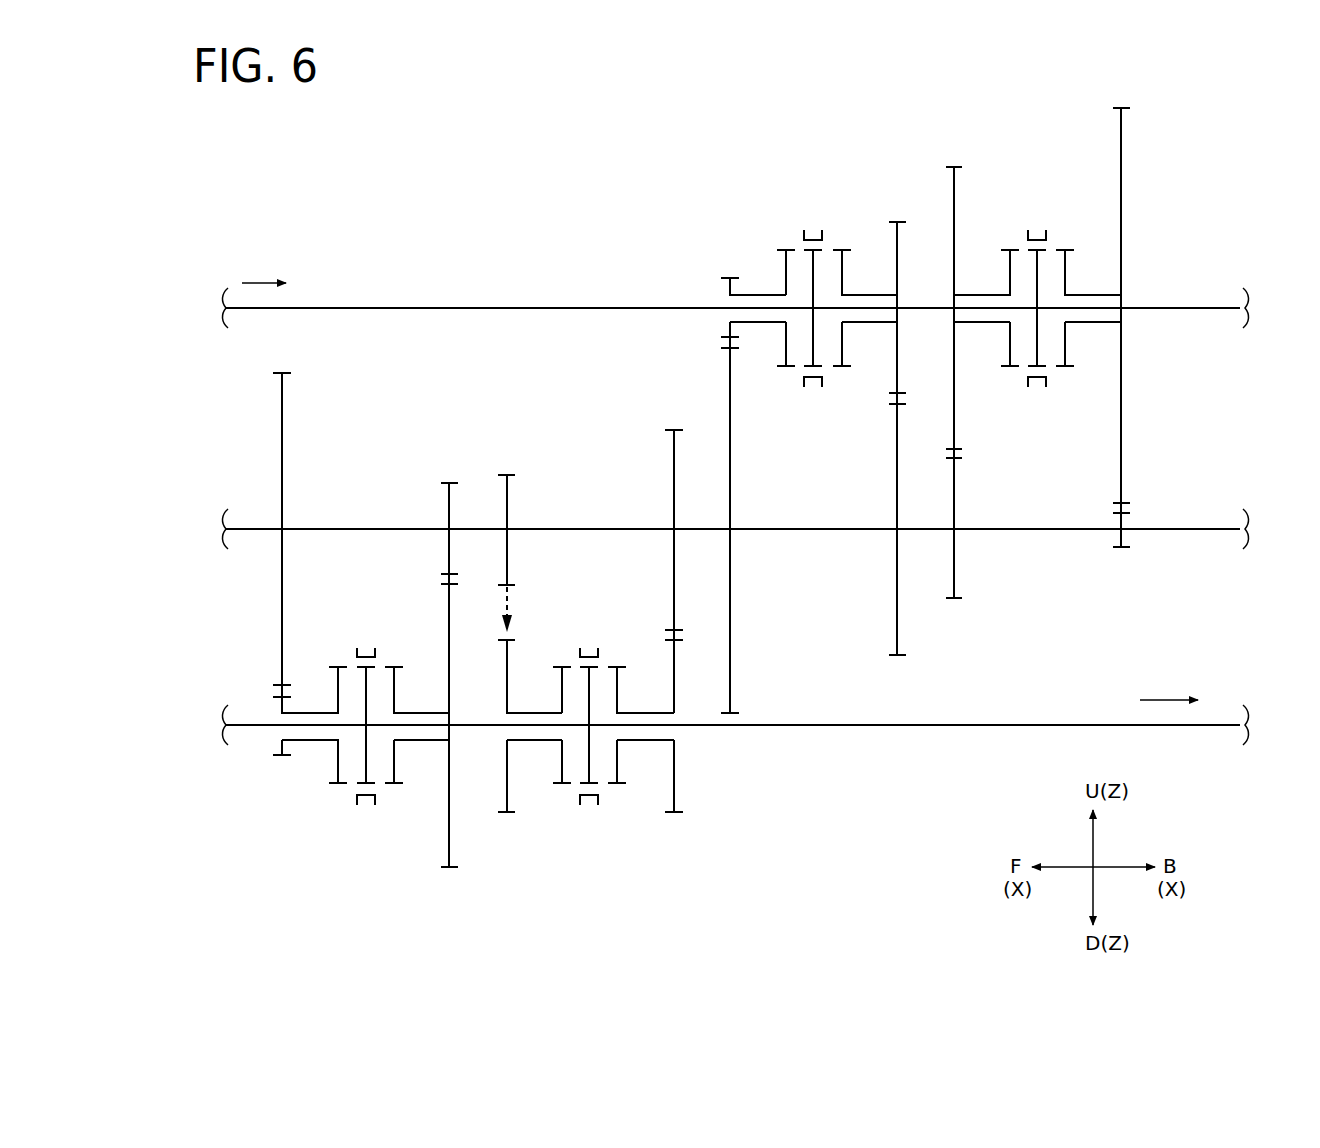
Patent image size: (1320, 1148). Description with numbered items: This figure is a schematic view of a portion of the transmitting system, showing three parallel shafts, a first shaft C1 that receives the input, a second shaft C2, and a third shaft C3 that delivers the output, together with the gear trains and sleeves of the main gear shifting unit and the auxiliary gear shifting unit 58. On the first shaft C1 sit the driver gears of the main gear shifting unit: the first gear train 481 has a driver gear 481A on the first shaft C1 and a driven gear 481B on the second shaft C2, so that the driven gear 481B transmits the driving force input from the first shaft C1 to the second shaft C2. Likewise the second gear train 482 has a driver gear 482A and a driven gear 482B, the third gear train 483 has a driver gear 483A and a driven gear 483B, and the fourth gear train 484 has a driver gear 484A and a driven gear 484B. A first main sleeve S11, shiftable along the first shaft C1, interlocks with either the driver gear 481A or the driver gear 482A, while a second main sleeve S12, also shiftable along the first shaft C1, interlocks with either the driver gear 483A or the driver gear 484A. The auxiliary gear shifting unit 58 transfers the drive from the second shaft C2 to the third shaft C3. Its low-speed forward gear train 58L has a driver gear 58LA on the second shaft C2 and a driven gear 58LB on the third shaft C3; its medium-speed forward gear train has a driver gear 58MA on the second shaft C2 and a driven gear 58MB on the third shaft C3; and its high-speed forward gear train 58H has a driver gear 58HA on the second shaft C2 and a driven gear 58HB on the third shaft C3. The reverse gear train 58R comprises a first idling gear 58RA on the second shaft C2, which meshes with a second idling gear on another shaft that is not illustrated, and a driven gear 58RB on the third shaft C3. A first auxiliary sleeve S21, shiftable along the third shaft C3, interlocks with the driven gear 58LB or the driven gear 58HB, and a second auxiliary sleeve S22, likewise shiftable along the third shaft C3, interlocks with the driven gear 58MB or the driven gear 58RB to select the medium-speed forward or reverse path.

The auxiliary gear shifting unit 58 is at (858, 122).
The first shaft C1 is at (247, 313).
The second shaft C2 is at (247, 526).
The third shaft C3 is at (247, 730).
The high-speed forward gear train 58H is at (180, 612).
The driver gear 58HA is at (282, 631).
The driven gear 58HB is at (282, 700).
The low-speed forward gear train 58L is at (356, 542).
The driver gear 58LA is at (449, 568).
The driven gear 58LB is at (449, 635).
The reverse gear train 58R is at (597, 542).
The first idling gear 58RA is at (507, 566).
The driven gear 58RB is at (510, 665).
The driver gear 58MA is at (674, 500).
The driven gear 58MB is at (674, 776).
The first gear train 481 is at (630, 316).
The driver gear 481A is at (730, 337).
The driven gear 481B is at (730, 380).
The second gear train 482 is at (803, 400).
The driver gear 482A is at (897, 372).
The driven gear 482B is at (897, 456).
The third gear train 483 is at (1045, 410).
The driver gear 483A is at (954, 418).
The driven gear 483B is at (954, 500).
The fourth gear train 484 is at (1224, 420).
The driver gear 484A is at (1121, 437).
The driven gear 484B is at (1121, 522).
The first main sleeve S11 is at (812, 216).
The second main sleeve S12 is at (1037, 216).
The first auxiliary sleeve S21 is at (365, 818).
The second auxiliary sleeve S22 is at (589, 818).